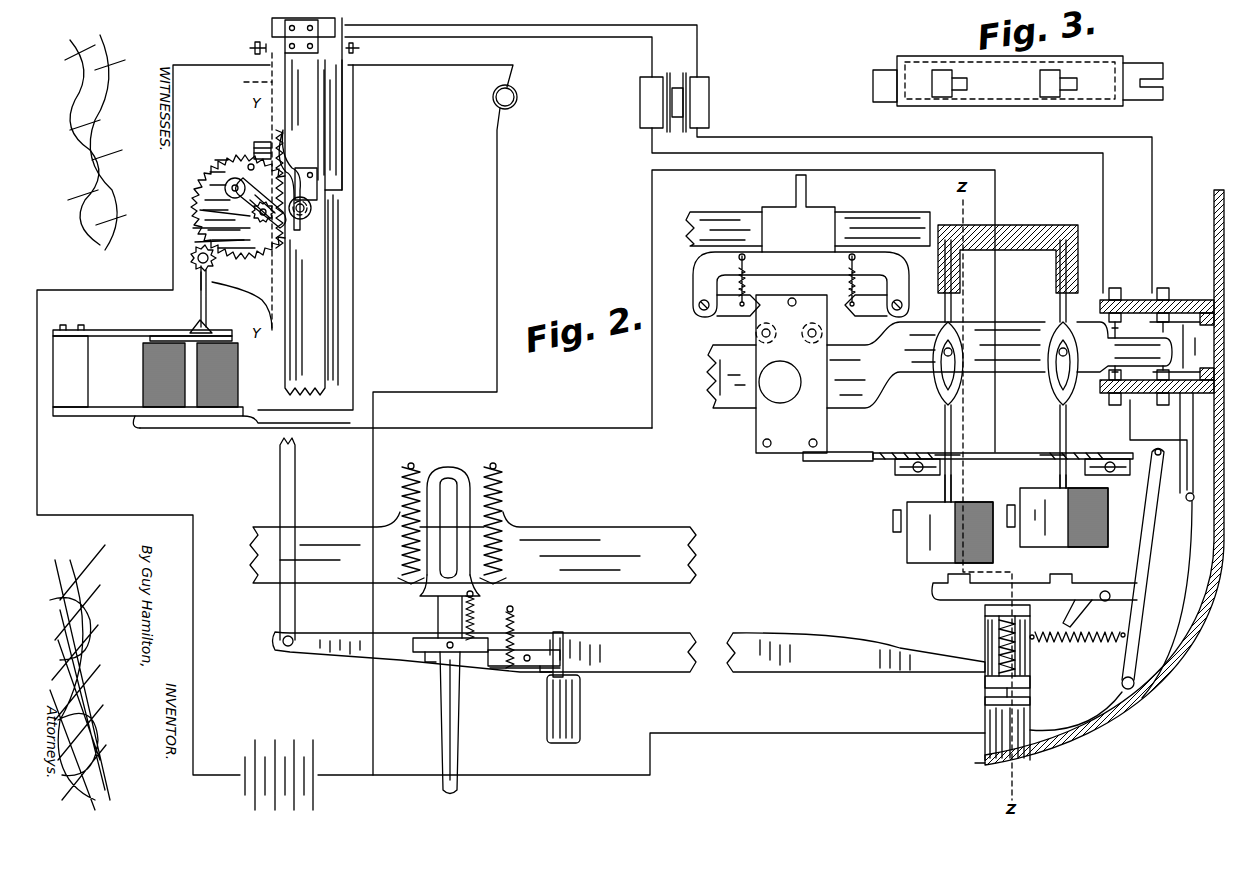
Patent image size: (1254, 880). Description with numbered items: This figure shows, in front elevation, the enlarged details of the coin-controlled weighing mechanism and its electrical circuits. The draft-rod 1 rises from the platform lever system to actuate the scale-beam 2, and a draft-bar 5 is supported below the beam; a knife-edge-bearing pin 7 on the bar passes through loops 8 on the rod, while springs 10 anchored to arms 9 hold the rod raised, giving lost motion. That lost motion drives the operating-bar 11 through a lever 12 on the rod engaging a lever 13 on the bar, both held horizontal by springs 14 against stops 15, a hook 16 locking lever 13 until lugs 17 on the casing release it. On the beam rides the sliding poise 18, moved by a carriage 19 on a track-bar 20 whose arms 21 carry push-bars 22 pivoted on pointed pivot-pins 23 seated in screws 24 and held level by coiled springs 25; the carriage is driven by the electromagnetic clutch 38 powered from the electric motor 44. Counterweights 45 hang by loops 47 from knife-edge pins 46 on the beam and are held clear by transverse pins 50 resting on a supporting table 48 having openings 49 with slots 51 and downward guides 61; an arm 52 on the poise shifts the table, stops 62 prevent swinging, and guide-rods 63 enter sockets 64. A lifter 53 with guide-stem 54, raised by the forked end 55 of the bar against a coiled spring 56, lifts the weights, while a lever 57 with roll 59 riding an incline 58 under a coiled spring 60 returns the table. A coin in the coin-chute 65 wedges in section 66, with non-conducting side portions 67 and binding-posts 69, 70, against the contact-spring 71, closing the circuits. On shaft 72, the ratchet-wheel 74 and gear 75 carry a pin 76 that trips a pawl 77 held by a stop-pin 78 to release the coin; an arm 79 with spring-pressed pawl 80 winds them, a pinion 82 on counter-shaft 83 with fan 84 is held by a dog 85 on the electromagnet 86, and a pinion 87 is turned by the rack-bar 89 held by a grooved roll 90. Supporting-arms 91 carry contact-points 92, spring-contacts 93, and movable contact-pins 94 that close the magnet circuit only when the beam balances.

In FIG. 2, the draft-rod 1 is at (443, 749).
In FIG. 2, the scale-beam 2 is at (712, 385).
In FIG. 2, the draft-bar 5 is at (253, 552).
In FIG. 2, the knife-edge-bearing pin 7 is at (448, 562).
In FIG. 2, the slots or loops 8 is at (445, 467).
In FIG. 2, the arms 9 is at (402, 489).
In FIG. 2, the springs 10 is at (404, 500).
In FIG. 2, the operating-bar 11 is at (623, 633).
In FIG. 2, the lever 12 is at (470, 655).
In FIG. 2, the lever 13 is at (503, 668).
In FIG. 2, the springs 14 is at (475, 616).
In FIG. 2, the stops 15 is at (425, 662).
In FIG. 2, the hook 16 is at (557, 632).
In FIG. 2, the lugs 17 is at (547, 717).
In FIG. 2, the sliding poise 18 is at (793, 449).
In FIG. 2, the carriage 19 is at (818, 224).
In FIG. 2, the track-bar 20 is at (895, 214).
In FIG. 2, the arms 21 is at (693, 283).
In FIG. 2, the contact or push bars 22 is at (734, 311).
In FIG. 2, the pivot-pin 23 is at (756, 338).
In FIG. 2, the screws 24 is at (700, 305).
In FIG. 2, the coiled springs 25 is at (748, 277).
In FIG. 2, the electromagnetic clutch 38 is at (711, 101).
In FIG. 2, the electric motor 44 is at (517, 92).
In FIG. 2, the counterweights or hanging poises 45 is at (907, 550).
In FIG. 2, the knife-edge pins 46 is at (944, 347).
In FIG. 2, the loops 47 is at (936, 380).
In FIG. 2, the supporting table or member 48 is at (990, 460).
In FIG. 3, the supporting table or member 48 is at (1010, 106).
In FIG. 2, the openings 49 is at (934, 455).
In FIG. 3, the openings 49 is at (940, 70).
In FIG. 2, the transverse pin 50 is at (945, 484).
In FIG. 3, the lateral extensions or slots 51 is at (958, 78).
In FIG. 2, the arm 52 is at (857, 452).
In FIG. 2, the lifter 53 is at (940, 589).
In FIG. 2, the guide-stem 54 is at (1031, 710).
In FIG. 2, the forked end 55 is at (1031, 686).
In FIG. 2, the coiled spring 56 is at (999, 635).
In FIG. 2, the lever 57 is at (1151, 536).
In FIG. 2, the incline 58 is at (1080, 600).
In FIG. 2, the roll 59 is at (1108, 592).
In FIG. 2, the coiled spring 60 is at (1085, 643).
In FIG. 2, the guides 61 is at (941, 468).
In FIG. 2, the stops 62 is at (892, 522).
In FIG. 2, the guide-rods 63 is at (945, 304).
In FIG. 2, the sockets 64 is at (1078, 240).
In FIG. 2, the coin-chute 65 is at (272, 23).
In FIG. 2, the section 66 is at (343, 128).
In FIG. 2, the side portions 67 is at (326, 100).
In FIG. 2, the binding-post 69 is at (360, 48).
In FIG. 2, the binding-post 70 is at (257, 50).
In FIG. 2, the contact-spring 71 is at (249, 82).
In FIG. 2, the shaft 72 is at (209, 241).
In FIG. 2, the ratchet-wheel 74 is at (211, 226).
In FIG. 2, the gear 75 is at (212, 190).
In FIG. 2, the pin 76 is at (248, 165).
In FIG. 2, the pawl 77 is at (298, 165).
In FIG. 2, the stop-pin 78 is at (257, 149).
In FIG. 2, the arm 79 is at (213, 207).
In FIG. 2, the spring-pressed pawl 80 is at (232, 180).
In FIG. 2, the pinion 82 is at (191, 262).
In FIG. 2, the counter-shaft 83 is at (201, 276).
In FIG. 2, the fan 84 is at (207, 298).
In FIG. 2, the dog 85 is at (198, 326).
In FIG. 2, the electromagnet 86 is at (143, 370).
In FIG. 2, the pinion 87 is at (276, 220).
In FIG. 2, the rack-bar 89 is at (318, 172).
In FIG. 2, the grooved roll 90 is at (312, 208).
In FIG. 2, the supporting-arms 91 is at (1225, 303).
In FIG. 2, the contact-point 92 is at (1163, 296).
In FIG. 2, the spring-contacts 93 is at (1197, 312).
In FIG. 2, the movable contact-pins 94 is at (1115, 296).